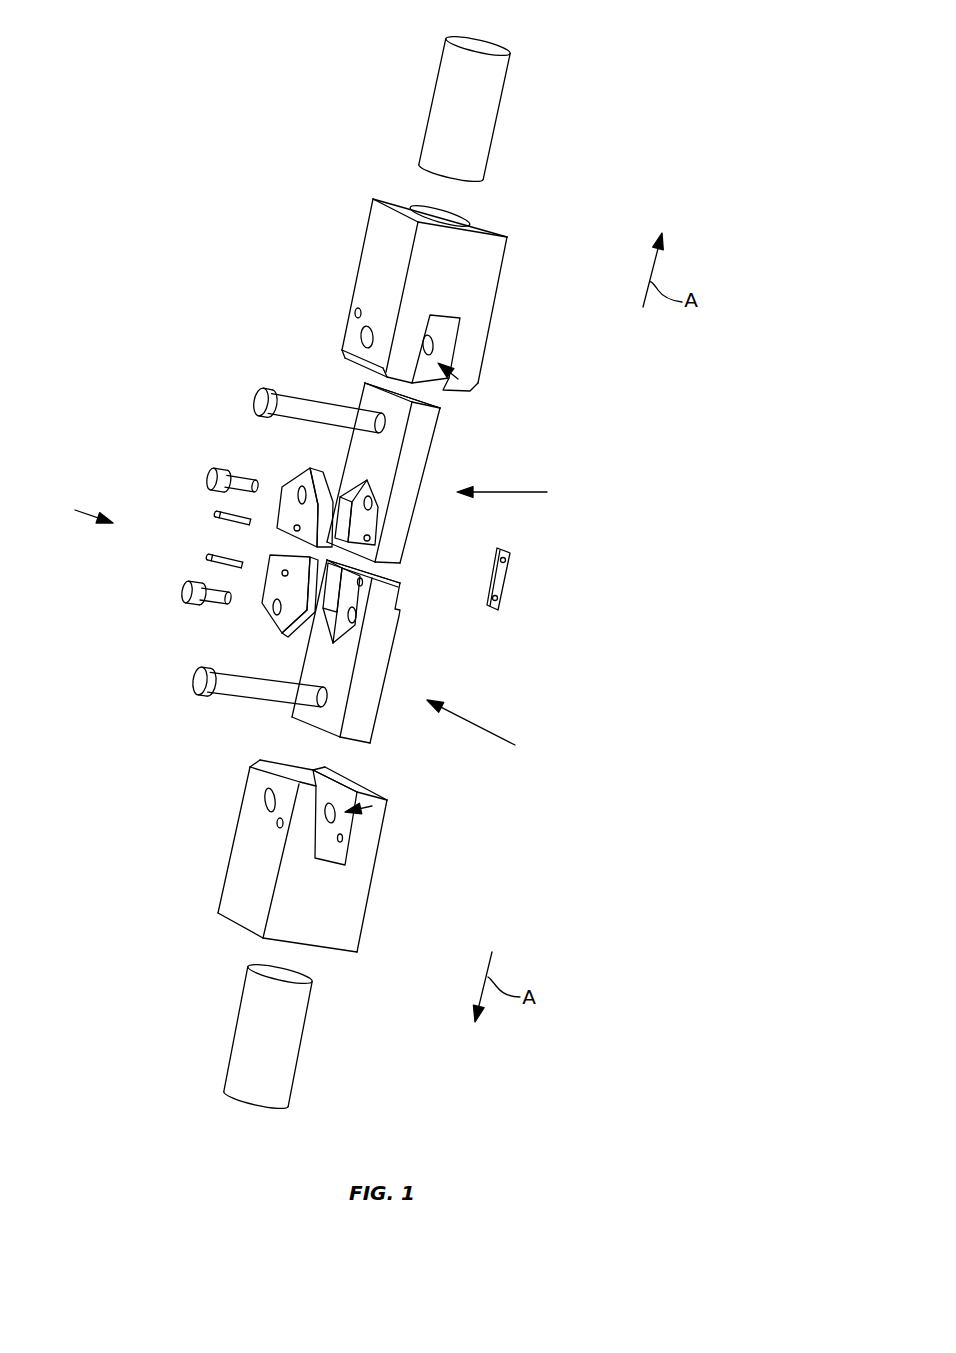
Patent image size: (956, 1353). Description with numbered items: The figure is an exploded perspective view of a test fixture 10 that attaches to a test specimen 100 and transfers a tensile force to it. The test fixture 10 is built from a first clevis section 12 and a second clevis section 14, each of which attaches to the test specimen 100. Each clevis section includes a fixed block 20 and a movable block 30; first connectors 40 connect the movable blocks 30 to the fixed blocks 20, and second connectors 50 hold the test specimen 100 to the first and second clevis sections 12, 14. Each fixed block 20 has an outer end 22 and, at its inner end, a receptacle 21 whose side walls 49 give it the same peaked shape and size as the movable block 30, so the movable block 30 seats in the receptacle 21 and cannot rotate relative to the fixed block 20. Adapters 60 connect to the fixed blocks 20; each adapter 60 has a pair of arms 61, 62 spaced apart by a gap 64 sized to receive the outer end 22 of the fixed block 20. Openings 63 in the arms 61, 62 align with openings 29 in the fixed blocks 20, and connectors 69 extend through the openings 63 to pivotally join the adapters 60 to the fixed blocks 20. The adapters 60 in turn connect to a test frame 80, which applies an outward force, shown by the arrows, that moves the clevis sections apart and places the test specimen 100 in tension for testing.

The test fixture 10 is at (78, 509).
The first clevis section 12 is at (497, 733).
The second clevis section 14 is at (515, 489).
The fixed block 20 is at (400, 525).
The receptacle 21 is at (370, 530).
The outer end 22 is at (440, 392).
The openings 29 is at (387, 427).
The movable block 30 is at (287, 487).
The first connectors 40 is at (208, 477).
The side walls 49 is at (340, 490).
The second connectors 50 is at (215, 515).
The adapters 60 is at (468, 267).
The arm 61 is at (412, 333).
The arm 62 is at (467, 357).
The openings 63 is at (362, 340).
The gap 64 is at (462, 380).
The connectors 69 is at (255, 398).
The test frame 80 is at (472, 112).
The test specimen 100 is at (500, 578).